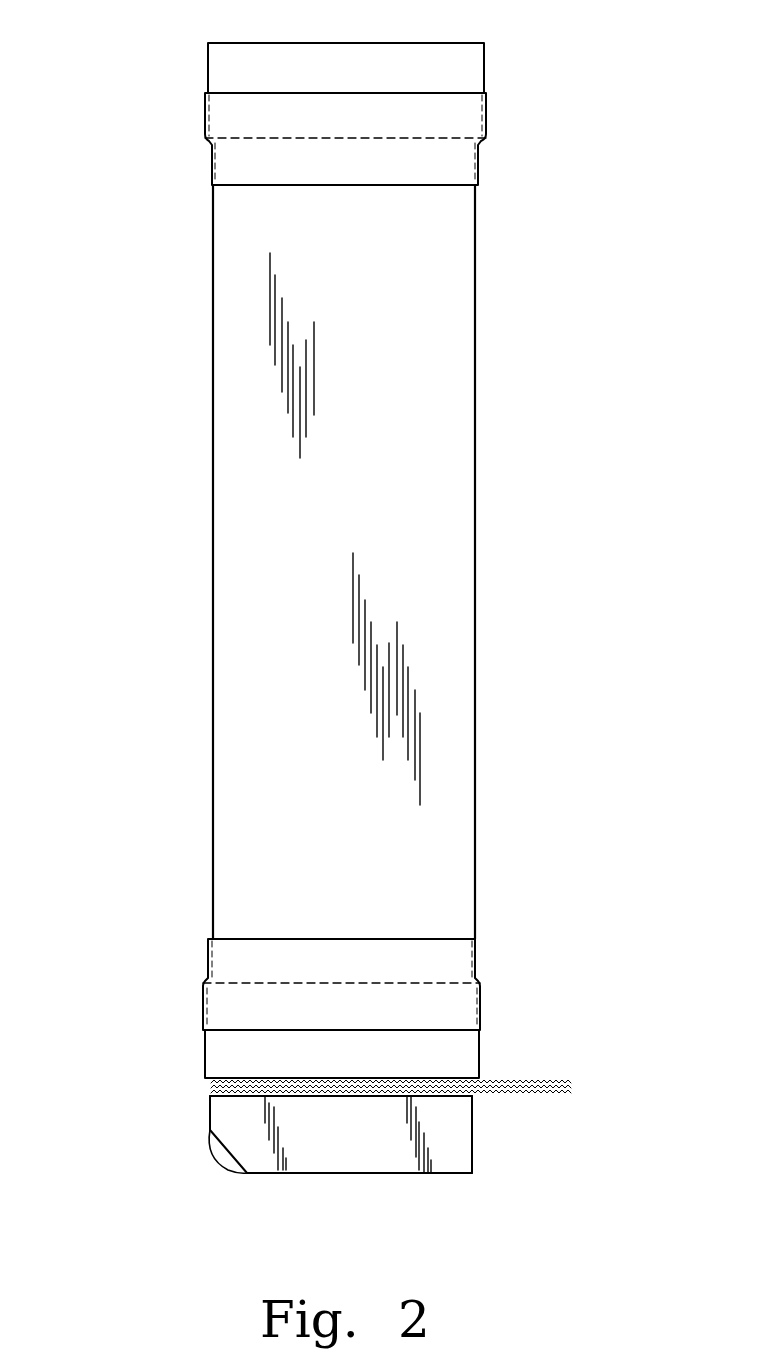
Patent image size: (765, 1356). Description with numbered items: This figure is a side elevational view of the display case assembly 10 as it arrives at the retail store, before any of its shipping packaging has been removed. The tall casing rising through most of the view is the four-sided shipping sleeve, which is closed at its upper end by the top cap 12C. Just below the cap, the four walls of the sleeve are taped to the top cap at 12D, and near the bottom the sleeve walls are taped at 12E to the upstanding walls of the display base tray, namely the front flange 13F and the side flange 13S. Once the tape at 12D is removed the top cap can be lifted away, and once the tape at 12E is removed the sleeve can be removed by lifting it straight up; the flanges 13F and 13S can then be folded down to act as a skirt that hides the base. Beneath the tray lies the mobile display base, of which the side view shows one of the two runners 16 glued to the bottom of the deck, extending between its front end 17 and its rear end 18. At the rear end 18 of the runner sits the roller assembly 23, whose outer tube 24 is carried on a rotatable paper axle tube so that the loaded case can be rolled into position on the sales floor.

The display case assembly 10 is at (532, 582).
The top cap 12C is at (342, 66).
The tape location at top cap 12D is at (197, 92).
The tape location at tray flanges 12E is at (192, 938).
The front flange 13F is at (478, 1046).
The side flange 13S is at (455, 1061).
The runner 16 is at (359, 1176).
The front end of runner 17 is at (473, 1150).
The rear end of runner 18 is at (210, 1120).
The roller assembly 23 is at (306, 1128).
The outer tube 24 is at (226, 1159).